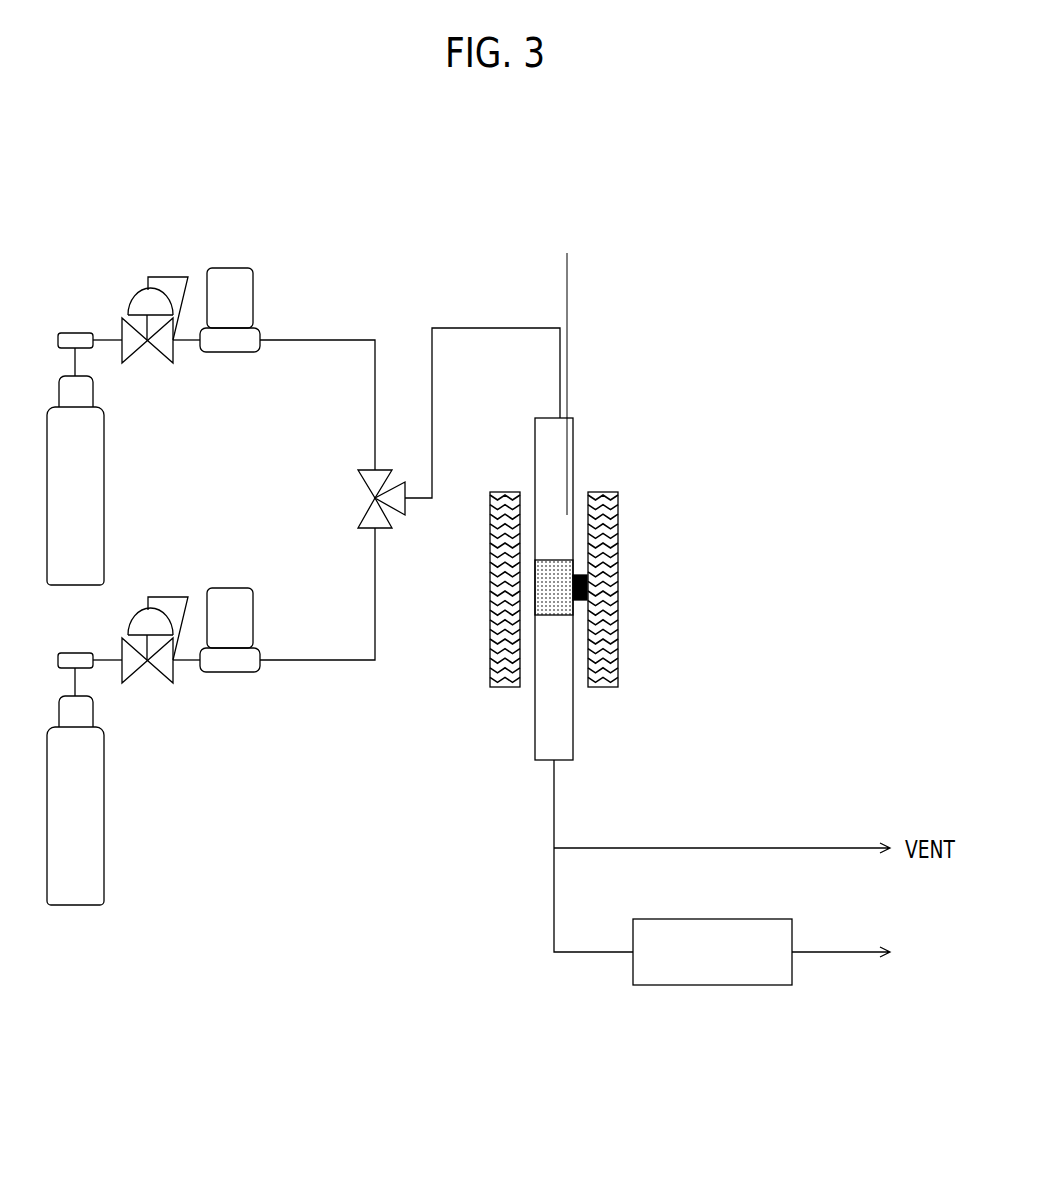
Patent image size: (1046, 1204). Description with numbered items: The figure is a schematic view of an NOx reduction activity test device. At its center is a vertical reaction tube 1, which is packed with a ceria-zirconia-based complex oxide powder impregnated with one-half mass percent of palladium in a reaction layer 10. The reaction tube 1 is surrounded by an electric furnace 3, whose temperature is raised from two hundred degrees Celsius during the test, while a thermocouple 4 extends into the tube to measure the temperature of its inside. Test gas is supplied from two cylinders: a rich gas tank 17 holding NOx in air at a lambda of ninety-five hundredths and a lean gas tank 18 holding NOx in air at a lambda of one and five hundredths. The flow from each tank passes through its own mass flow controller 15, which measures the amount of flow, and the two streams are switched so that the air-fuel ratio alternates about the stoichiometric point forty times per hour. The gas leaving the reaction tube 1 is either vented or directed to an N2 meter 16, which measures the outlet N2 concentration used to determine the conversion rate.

The reaction tube 1 is at (573, 440).
The electric furnace 3 is at (618, 592).
The thermocouple 4 is at (568, 317).
The reaction layer 10 is at (553, 615).
The mass flow controller 15 is at (228, 268).
The N2 meter 16 is at (778, 986).
The rich gas tank 17 is at (104, 453).
The lean gas tank 18 is at (104, 773).